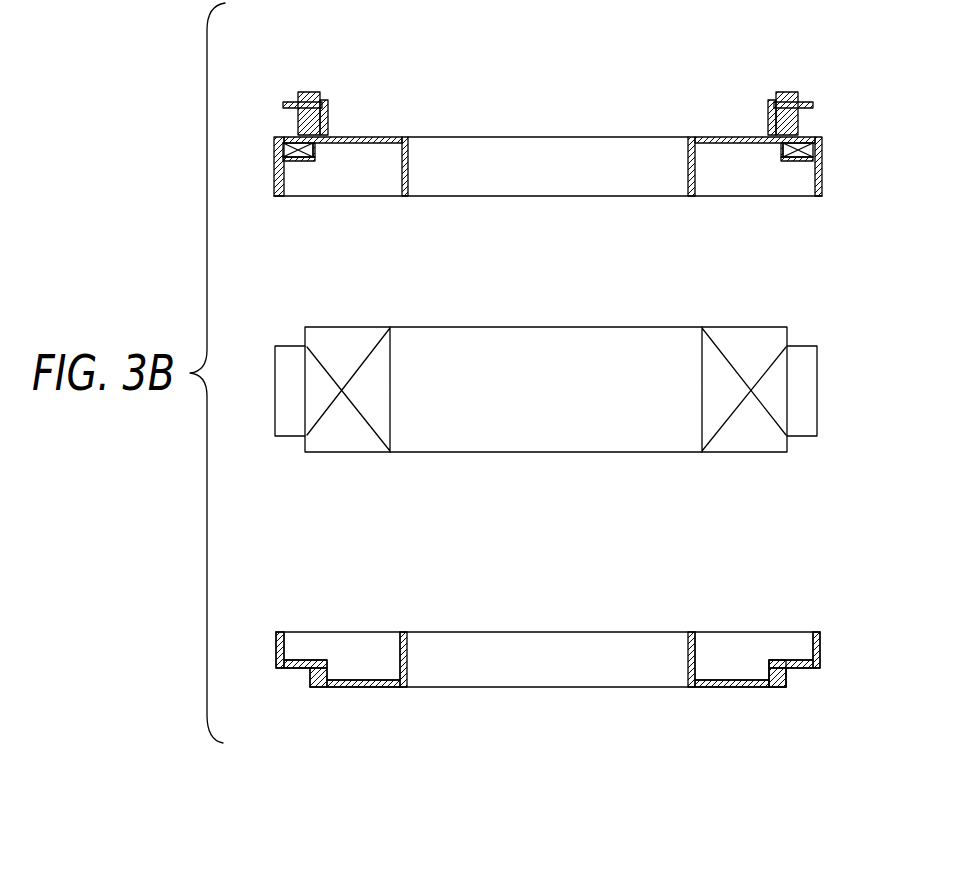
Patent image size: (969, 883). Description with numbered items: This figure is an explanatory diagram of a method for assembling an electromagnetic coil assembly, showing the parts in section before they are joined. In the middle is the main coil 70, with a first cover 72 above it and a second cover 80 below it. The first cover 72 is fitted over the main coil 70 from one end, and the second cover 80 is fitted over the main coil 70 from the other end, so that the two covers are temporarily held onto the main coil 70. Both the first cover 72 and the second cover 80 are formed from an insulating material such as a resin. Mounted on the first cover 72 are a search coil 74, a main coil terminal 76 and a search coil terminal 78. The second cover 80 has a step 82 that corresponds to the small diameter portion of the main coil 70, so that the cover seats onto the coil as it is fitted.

The main coil 70 is at (795, 323).
The first cover 72 is at (553, 137).
The search coil 74 is at (822, 150).
The main coil terminal 76 is at (290, 101).
The search coil terminal 78 is at (813, 105).
The second cover 80 is at (562, 690).
The step 82 is at (786, 678).